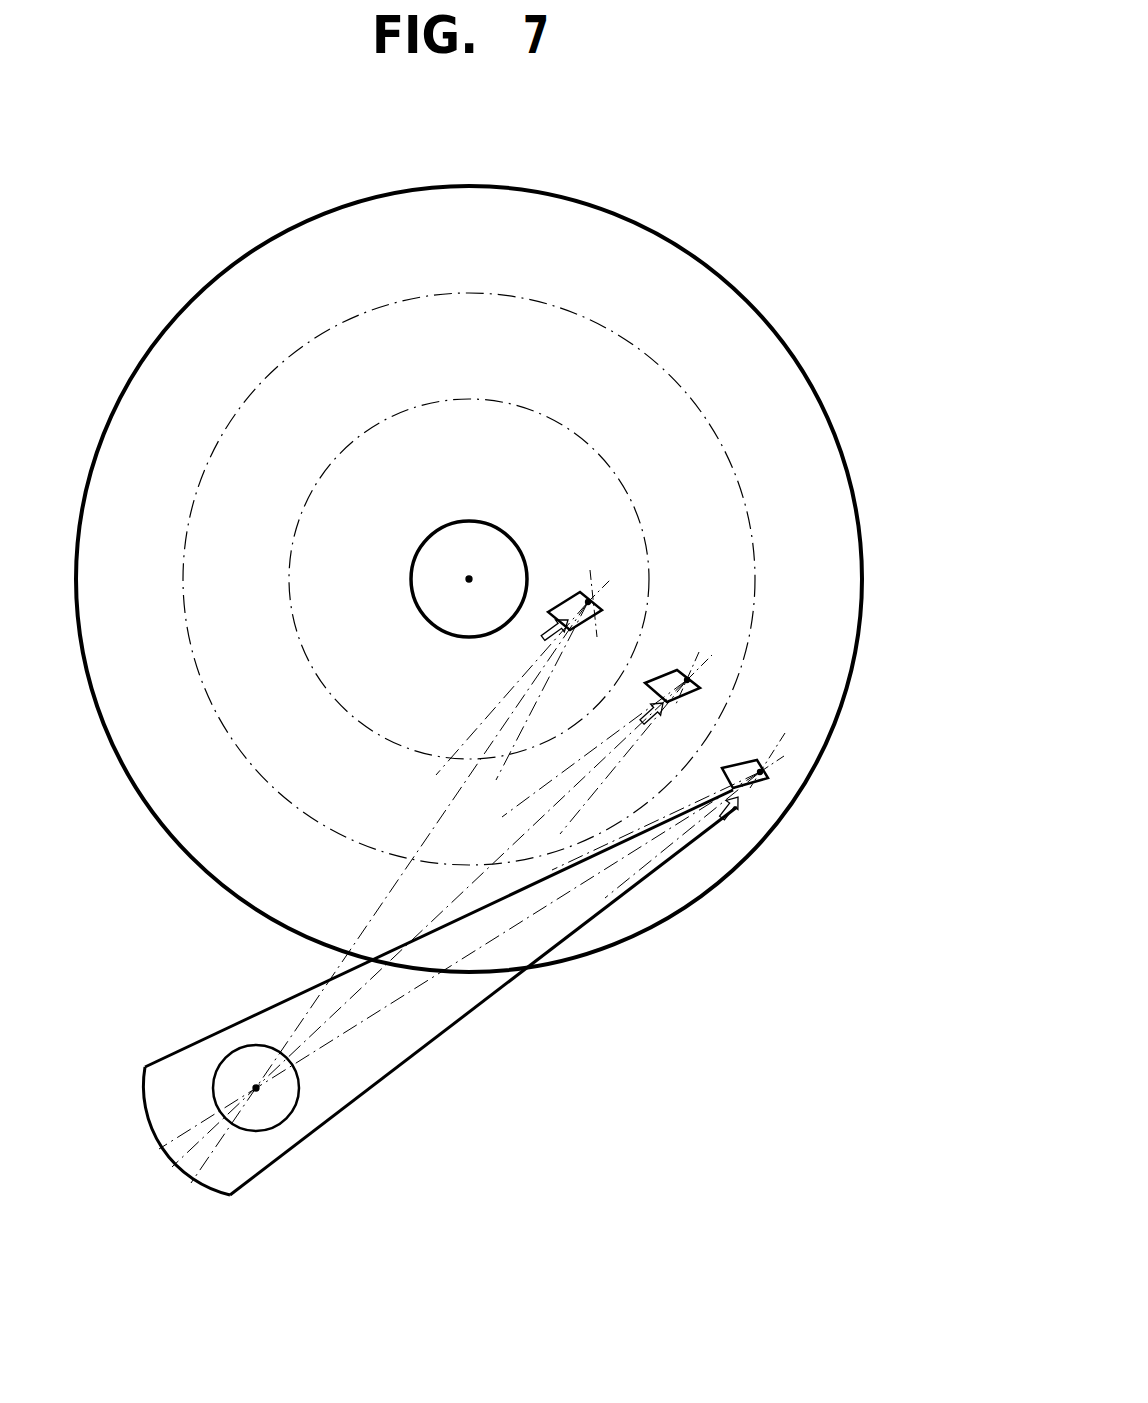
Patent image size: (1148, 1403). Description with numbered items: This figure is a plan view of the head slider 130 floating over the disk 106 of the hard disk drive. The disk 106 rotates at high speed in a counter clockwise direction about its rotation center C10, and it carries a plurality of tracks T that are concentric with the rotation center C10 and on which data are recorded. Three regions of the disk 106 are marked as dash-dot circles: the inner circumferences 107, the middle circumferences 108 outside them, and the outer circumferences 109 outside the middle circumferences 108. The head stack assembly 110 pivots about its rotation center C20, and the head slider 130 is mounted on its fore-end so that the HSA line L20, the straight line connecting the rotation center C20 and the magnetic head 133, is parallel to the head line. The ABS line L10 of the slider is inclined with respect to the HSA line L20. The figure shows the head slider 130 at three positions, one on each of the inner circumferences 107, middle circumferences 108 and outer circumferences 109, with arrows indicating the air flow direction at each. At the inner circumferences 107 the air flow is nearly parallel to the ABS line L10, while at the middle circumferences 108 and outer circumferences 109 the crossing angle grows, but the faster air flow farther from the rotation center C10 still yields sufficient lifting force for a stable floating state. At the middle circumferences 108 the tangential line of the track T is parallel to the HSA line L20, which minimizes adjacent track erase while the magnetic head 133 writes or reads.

The disk 106 is at (727, 283).
The inner circumferences 107 is at (409, 497).
The middle circumferences 108 is at (340, 412).
The outer circumferences 109 is at (272, 333).
The head stack assembly 110 is at (590, 920).
The head slider 130 is at (753, 794).
The magnetic head 133 is at (591, 626).
The rotation center of the disk C10 is at (470, 576).
The rotation center of the HSA C20 is at (258, 1093).
The ABS line L10 is at (597, 605).
The HSA line L20 is at (407, 997).
The tracks T is at (591, 580).